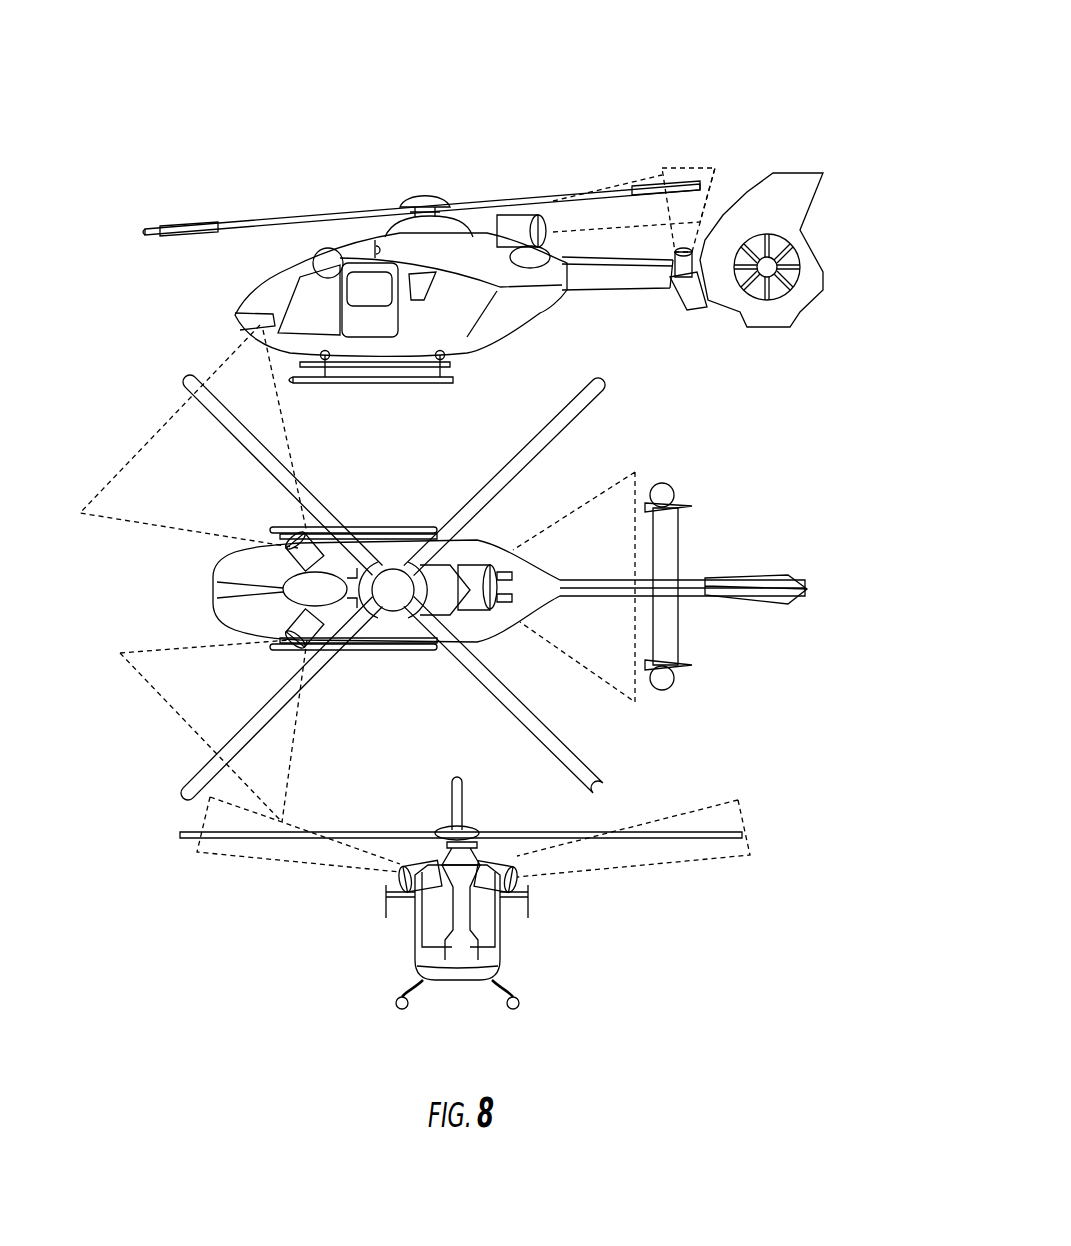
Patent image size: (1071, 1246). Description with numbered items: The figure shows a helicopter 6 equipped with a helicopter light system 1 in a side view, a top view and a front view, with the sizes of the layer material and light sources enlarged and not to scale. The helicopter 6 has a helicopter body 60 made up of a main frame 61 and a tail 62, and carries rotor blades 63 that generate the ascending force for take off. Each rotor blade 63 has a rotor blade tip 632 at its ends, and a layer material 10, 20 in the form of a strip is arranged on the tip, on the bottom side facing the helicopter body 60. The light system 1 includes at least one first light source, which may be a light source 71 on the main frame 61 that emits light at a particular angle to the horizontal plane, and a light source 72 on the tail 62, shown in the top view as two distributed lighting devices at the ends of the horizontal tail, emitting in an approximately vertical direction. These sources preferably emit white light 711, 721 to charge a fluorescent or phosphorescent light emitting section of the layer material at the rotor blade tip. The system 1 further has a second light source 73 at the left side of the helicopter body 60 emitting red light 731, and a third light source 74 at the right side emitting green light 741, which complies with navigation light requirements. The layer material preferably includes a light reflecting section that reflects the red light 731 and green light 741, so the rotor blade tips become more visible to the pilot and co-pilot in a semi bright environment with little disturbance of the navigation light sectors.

The helicopter light system 1 is at (652, 111).
The helicopter 6 is at (342, 963).
The layer material 10 is at (409, 218).
The layer material 20 is at (662, 180).
The helicopter body 60 is at (540, 313).
The main frame 61 is at (427, 327).
The tail 62 is at (602, 277).
The rotor blade 63 is at (292, 215).
The rotor blade tip 632 is at (172, 230).
The light source 71 is at (515, 228).
The white light 711 is at (630, 220).
The light source 72 is at (710, 578).
The white light 721 is at (697, 227).
The second light source 73 is at (292, 618).
The red light 731 is at (178, 684).
The third light source 74 is at (292, 538).
The green light 741 is at (147, 487).